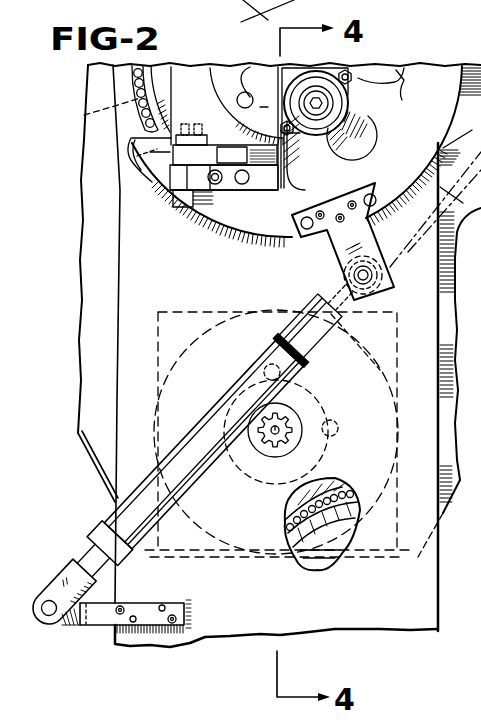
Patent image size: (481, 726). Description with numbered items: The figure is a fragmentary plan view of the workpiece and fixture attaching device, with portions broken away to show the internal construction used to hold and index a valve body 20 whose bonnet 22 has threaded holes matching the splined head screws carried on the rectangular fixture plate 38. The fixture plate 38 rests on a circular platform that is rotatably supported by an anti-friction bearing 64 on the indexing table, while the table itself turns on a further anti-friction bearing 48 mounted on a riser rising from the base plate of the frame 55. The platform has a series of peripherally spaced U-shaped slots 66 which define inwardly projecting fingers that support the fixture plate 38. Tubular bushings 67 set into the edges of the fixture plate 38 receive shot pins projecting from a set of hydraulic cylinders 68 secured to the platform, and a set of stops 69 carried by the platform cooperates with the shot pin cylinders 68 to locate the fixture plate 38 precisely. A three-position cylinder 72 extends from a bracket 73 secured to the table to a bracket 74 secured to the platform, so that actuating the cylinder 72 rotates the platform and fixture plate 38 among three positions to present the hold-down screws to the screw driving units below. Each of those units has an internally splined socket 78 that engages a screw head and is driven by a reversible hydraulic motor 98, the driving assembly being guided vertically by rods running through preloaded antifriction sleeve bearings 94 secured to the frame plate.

The valve body 20 is at (466, 17).
The bonnet 22 is at (231, 76).
The fixture member or plate 38 is at (192, 66).
The anti-friction bearing 48 is at (286, 512).
The frame 55 is at (449, 515).
The anti-friction bearing 64 is at (85, 115).
The U-shaped slots 66 is at (370, 136).
The tubular bushings 67 is at (126, 163).
The hydraulic cylinders 68 is at (183, 206).
The stops 69 is at (227, 147).
The three-position cylinder 72 is at (162, 481).
The bracket 73 is at (111, 612).
The bracket 74 is at (382, 250).
The internally splined socket 78 is at (330, 102).
The antifriction sleeve bearings 94 is at (460, 412).
The reversible hydraulic motor 98 is at (460, 315).